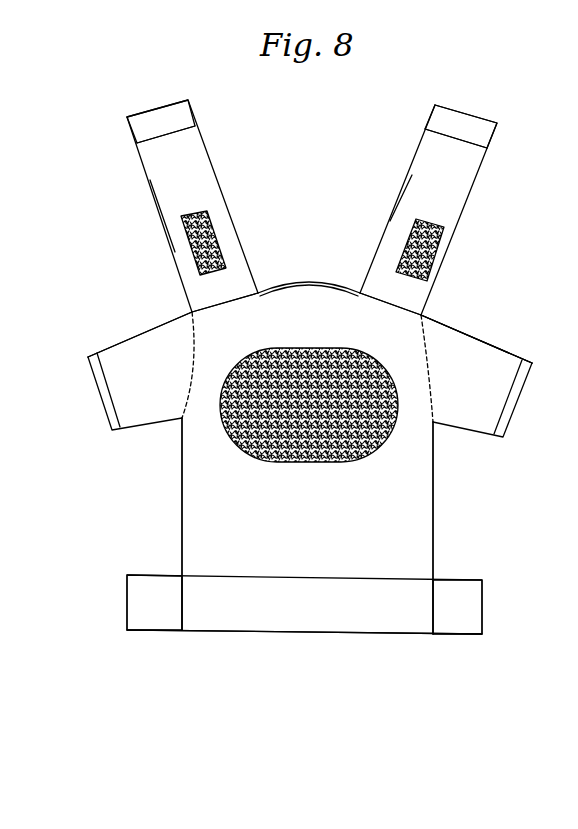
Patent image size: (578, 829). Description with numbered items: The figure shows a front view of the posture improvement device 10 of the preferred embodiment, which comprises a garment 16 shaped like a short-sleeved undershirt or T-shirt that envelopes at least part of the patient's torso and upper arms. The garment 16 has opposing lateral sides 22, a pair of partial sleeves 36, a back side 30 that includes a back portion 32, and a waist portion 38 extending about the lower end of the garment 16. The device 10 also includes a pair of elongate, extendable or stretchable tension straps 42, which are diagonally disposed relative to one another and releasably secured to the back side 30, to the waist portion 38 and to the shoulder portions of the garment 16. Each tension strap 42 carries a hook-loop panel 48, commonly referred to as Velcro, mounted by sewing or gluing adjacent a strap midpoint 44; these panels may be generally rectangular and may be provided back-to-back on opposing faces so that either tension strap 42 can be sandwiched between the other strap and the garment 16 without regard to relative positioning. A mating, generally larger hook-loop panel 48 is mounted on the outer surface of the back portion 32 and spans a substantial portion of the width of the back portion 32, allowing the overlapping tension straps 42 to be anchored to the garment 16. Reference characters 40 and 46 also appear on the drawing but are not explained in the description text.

The posture improvement device 10 is at (218, 86).
The garment 16 is at (453, 324).
The opposing lateral sides 22 is at (181, 509).
The back side 30 is at (310, 560).
The back portion 32 is at (310, 463).
The partial sleeves 36 is at (117, 345).
The waist portion 38 is at (285, 633).
The lower edge 40 is at (447, 637).
The tension straps 42 is at (145, 183).
The strap midpoint 44 is at (172, 252).
The loop fastener regions 46 is at (145, 113).
The hook-loop panel 48 is at (137, 128).